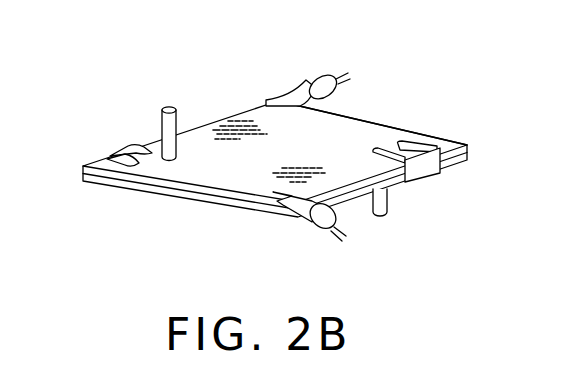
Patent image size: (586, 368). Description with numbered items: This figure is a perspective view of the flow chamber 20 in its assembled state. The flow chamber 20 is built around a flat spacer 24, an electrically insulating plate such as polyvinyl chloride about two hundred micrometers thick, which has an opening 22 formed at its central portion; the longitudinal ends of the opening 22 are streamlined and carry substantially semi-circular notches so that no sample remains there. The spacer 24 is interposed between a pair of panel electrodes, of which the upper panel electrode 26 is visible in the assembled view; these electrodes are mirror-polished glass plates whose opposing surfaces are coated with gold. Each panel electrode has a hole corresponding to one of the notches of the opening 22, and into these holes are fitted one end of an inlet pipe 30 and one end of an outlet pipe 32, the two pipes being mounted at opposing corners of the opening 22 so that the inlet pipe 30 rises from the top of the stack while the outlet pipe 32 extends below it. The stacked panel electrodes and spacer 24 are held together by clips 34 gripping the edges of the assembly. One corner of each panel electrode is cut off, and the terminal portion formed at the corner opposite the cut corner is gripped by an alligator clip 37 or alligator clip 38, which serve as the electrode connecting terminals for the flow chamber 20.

The flow chamber 20 is at (353, 107).
The opening 22 is at (470, 159).
The flat spacer 24 is at (163, 188).
The panel electrode 26 is at (370, 118).
The inlet pipe 30 is at (159, 120).
The outlet pipe 32 is at (387, 215).
The clips 34 is at (108, 156).
The alligator clip 37 is at (322, 233).
The alligator clip 38 is at (327, 72).